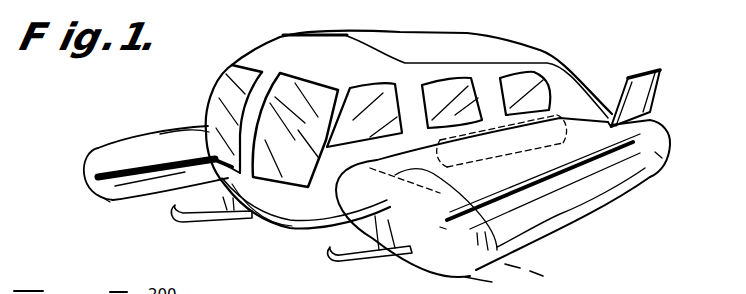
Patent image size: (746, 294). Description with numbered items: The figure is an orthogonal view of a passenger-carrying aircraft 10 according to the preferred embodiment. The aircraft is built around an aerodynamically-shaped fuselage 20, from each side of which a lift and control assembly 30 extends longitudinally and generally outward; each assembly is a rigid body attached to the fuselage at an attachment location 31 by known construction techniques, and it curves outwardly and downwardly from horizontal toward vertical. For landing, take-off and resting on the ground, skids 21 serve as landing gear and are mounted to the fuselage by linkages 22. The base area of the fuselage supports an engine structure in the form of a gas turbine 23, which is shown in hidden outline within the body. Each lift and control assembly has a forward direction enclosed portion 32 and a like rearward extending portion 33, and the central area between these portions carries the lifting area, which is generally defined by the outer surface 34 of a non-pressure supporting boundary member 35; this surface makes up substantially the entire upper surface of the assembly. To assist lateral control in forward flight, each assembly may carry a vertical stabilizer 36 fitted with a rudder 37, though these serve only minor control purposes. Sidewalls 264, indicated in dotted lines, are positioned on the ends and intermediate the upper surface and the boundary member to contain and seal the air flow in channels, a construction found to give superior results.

The aircraft 10 is at (190, 88).
The fuselage 20 is at (265, 43).
The skids 21 is at (327, 257).
The linkages 22 is at (240, 223).
The gas turbine 23 is at (567, 143).
The lift and control assemblies 30 is at (92, 144).
The attachment location 31 is at (445, 161).
The forward direction enclosed portion 32 is at (112, 192).
The rearward extending portion 33 is at (657, 154).
The outer surface 34 is at (580, 196).
The non-pressure supporting boundary member 35 is at (518, 215).
The vertical stabilizer 36 is at (637, 78).
The rudder 37 is at (656, 92).
The sidewalls 264 is at (544, 279).